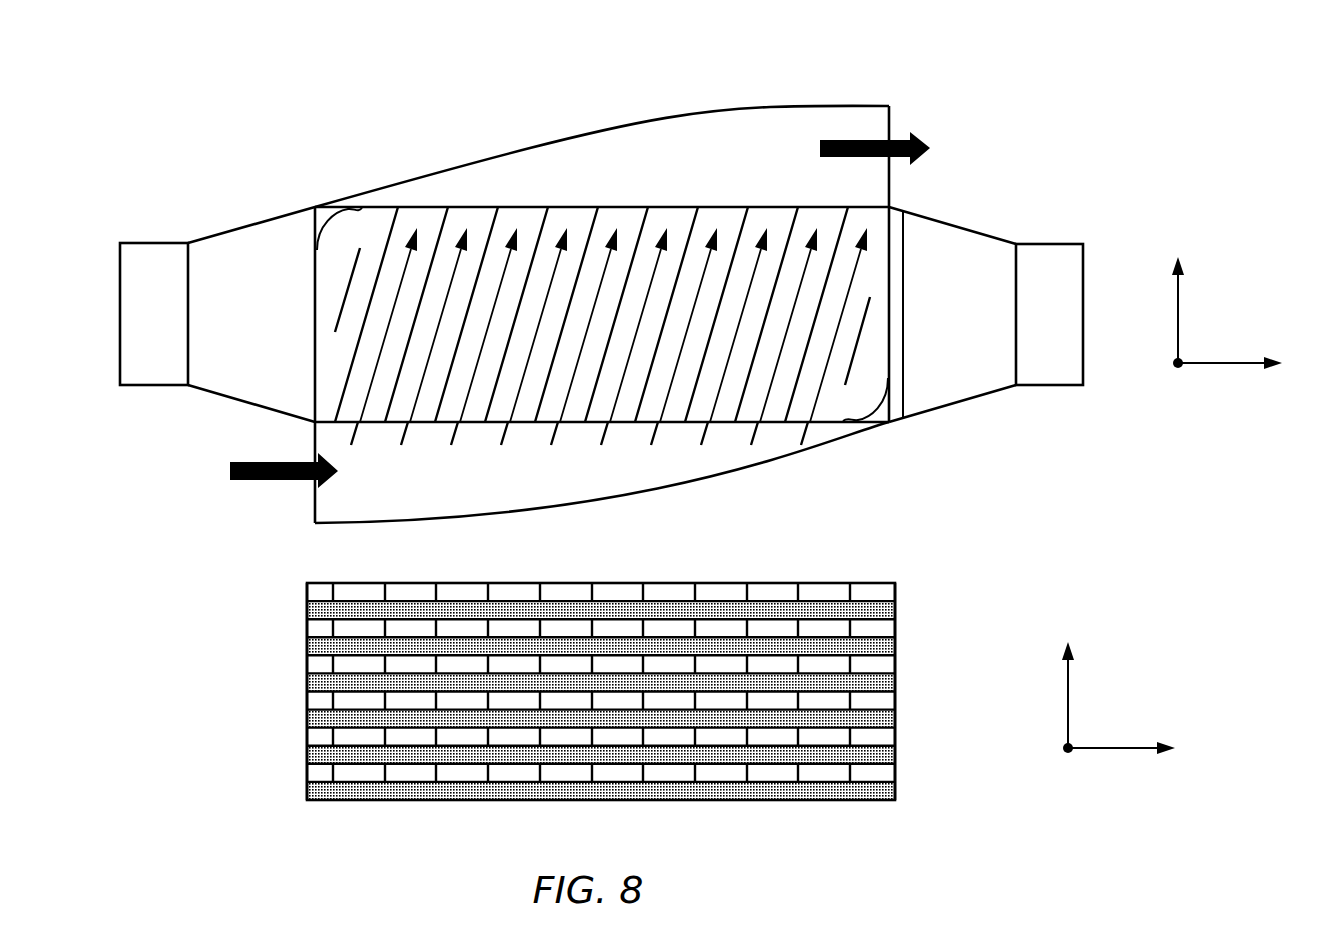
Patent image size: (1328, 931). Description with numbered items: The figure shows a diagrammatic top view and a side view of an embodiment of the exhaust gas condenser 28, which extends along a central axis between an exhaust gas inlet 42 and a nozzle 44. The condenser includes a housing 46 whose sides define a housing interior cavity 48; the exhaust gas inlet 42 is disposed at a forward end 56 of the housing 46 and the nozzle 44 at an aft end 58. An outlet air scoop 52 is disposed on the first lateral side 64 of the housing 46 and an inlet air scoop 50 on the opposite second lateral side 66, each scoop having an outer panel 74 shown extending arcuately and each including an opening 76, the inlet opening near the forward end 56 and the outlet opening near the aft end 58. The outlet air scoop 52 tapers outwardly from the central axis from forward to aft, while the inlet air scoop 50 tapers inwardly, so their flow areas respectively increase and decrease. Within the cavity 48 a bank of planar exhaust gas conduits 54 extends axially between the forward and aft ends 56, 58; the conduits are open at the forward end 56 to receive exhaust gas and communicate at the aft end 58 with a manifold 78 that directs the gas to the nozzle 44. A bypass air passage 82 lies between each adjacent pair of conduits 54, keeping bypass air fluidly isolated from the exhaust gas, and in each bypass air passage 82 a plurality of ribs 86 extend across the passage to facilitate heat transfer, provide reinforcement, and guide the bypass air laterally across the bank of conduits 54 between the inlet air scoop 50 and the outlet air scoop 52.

The exhaust gas condenser 28 is at (1010, 65).
The exhaust gas inlet 42 is at (186, 210).
The nozzle 44 is at (1032, 222).
The housing 46 is at (745, 180).
The housing interior cavity 48 is at (868, 383).
The inlet air scoop 50 is at (622, 510).
The outlet air scoop 52 is at (538, 136).
The exhaust gas conduits 54 is at (317, 792).
The forward end 56 is at (313, 424).
The aft end 58 is at (890, 207).
The first lateral side 64 is at (422, 192).
The second lateral side 66 is at (830, 427).
The outer panel 74 is at (702, 108).
The opening 76 is at (890, 124).
The manifold 78 is at (897, 400).
The bypass air passage 82 is at (315, 667).
The ribs 86 is at (690, 223).